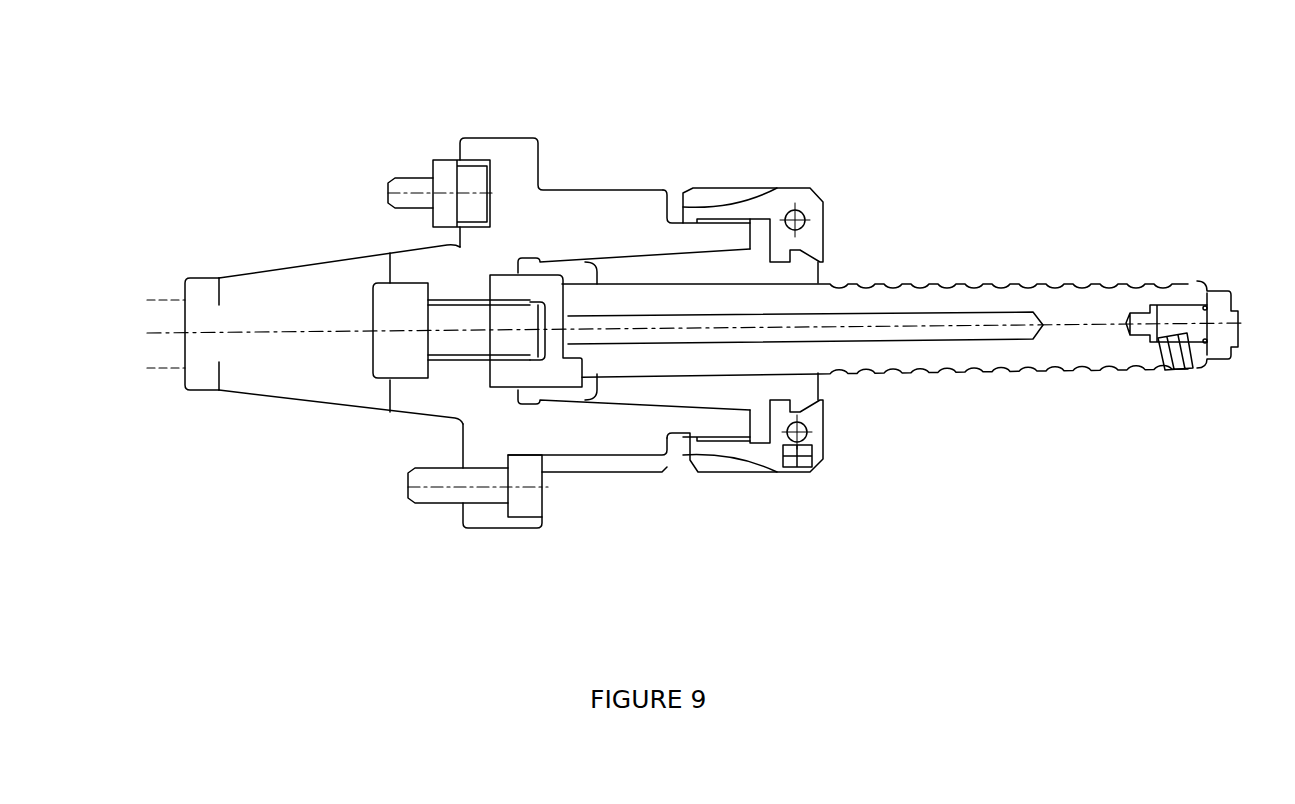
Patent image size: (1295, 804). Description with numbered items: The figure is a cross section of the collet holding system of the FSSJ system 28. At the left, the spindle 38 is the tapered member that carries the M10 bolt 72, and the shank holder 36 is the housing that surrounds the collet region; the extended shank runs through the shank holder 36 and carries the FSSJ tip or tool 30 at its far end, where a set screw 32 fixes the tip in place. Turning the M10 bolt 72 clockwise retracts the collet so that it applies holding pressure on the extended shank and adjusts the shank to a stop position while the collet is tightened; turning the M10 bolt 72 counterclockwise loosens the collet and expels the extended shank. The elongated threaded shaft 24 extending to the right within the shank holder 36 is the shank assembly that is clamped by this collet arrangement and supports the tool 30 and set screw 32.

The threaded shaft 24 is at (1173, 477).
The FSSJ system 28 is at (876, 140).
The FSSJ tip or tool 30 is at (1223, 293).
The set screw 32 is at (1187, 364).
The shank holder 36 is at (385, 152).
The spindle 38 is at (395, 432).
The M10 bolt 72 is at (395, 308).